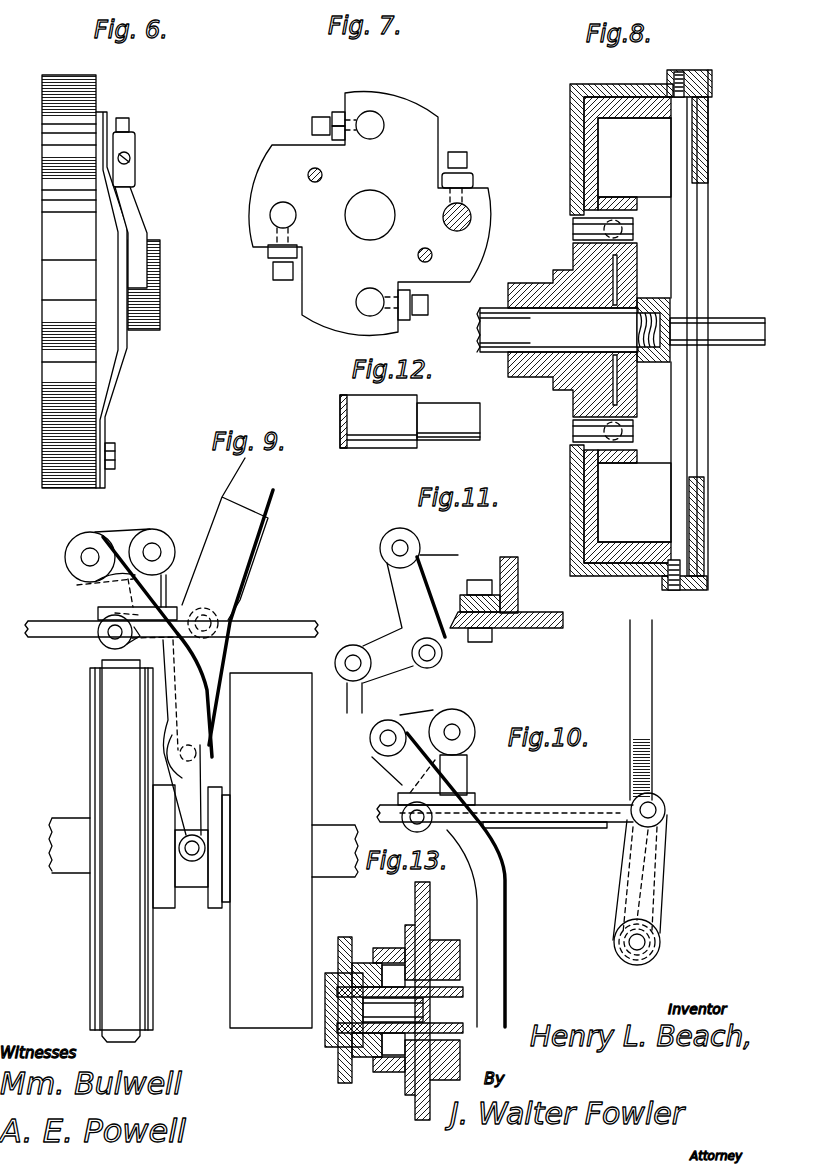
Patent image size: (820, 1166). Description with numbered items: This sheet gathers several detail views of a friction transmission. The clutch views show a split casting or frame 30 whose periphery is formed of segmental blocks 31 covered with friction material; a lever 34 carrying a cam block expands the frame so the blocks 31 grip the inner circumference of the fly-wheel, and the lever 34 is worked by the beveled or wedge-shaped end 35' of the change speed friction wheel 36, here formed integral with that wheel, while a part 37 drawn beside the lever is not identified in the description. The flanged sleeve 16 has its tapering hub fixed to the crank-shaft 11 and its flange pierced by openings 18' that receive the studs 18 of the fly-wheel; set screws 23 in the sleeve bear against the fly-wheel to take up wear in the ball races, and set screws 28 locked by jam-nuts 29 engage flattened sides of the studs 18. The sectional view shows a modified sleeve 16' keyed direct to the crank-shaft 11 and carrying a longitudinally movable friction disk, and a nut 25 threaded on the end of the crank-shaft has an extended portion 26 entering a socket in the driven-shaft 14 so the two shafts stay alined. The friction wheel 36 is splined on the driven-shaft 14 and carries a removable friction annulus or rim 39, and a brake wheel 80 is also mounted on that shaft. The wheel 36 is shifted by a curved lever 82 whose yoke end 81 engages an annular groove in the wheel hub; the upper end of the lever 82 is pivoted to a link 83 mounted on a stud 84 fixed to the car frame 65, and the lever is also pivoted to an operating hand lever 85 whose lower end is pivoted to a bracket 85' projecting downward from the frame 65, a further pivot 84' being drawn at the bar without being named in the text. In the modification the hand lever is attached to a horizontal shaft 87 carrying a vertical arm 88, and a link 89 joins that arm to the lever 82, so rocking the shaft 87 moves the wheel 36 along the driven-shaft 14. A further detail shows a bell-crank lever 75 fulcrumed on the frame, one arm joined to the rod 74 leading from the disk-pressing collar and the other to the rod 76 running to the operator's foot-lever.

In FIG. 6, the segmental blocks 31 is at (67, 76).
In FIG. 6, the casting or frame 30 is at (134, 300).
In FIG. 6, the lever 34 is at (142, 206).
In FIG. 6, the hub 37 is at (161, 258).
In FIG. 7, the flanged sleeve 16 is at (370, 214).
In FIG. 8, the sleeve 16' is at (548, 345).
In FIG. 7, the studs 18 is at (404, 210).
In FIG. 7, the openings 18' is at (372, 211).
In FIG. 7, the set screws 23 is at (366, 221).
In FIG. 7, the set screws 28 is at (312, 125).
In FIG. 7, the jam-nuts 29 is at (272, 249).
In FIG. 12, the crank-shaft 11 is at (410, 421).
In FIG. 8, the crank-shaft 11 is at (557, 330).
In FIG. 8, the extended portion 26 is at (734, 320).
In FIG. 13, the extended portion 26 is at (393, 1010).
In FIG. 9, the car frame 65 is at (40, 625).
In FIG. 9, the link 83 is at (119, 540).
In FIG. 9, the stud 84 is at (149, 595).
In FIG. 9, the pivot 84' is at (132, 639).
In FIG. 9, the lever 82 is at (95, 591).
In FIG. 10, the lever 82 is at (505, 909).
In FIG. 9, the operating hand lever 85 is at (238, 539).
In FIG. 10, the operating hand lever 85 is at (661, 710).
In FIG. 9, the bracket 85' is at (246, 617).
In FIG. 9, the yoke end 81 is at (192, 777).
In FIG. 9, the change speed friction wheel 36 is at (152, 946).
In FIG. 13, the change speed friction wheel 36 is at (430, 920).
In FIG. 9, the friction annulus or rim 39 is at (127, 986).
In FIG. 9, the brake wheel 80 is at (294, 850).
In FIG. 11, the bell-crank lever 75 is at (402, 585).
In FIG. 11, the rod 76 is at (447, 541).
In FIG. 11, the rod 74 is at (362, 699).
In FIG. 10, the link 89 is at (597, 805).
In FIG. 10, the vertical arm 88 is at (660, 861).
In FIG. 10, the horizontal shaft 87 is at (650, 941).
In FIG. 13, the driven-shaft 14 is at (445, 996).
In FIG. 13, the nut 25 is at (340, 978).
In FIG. 13, the beveled or wedge-shaped end 35' is at (381, 1011).